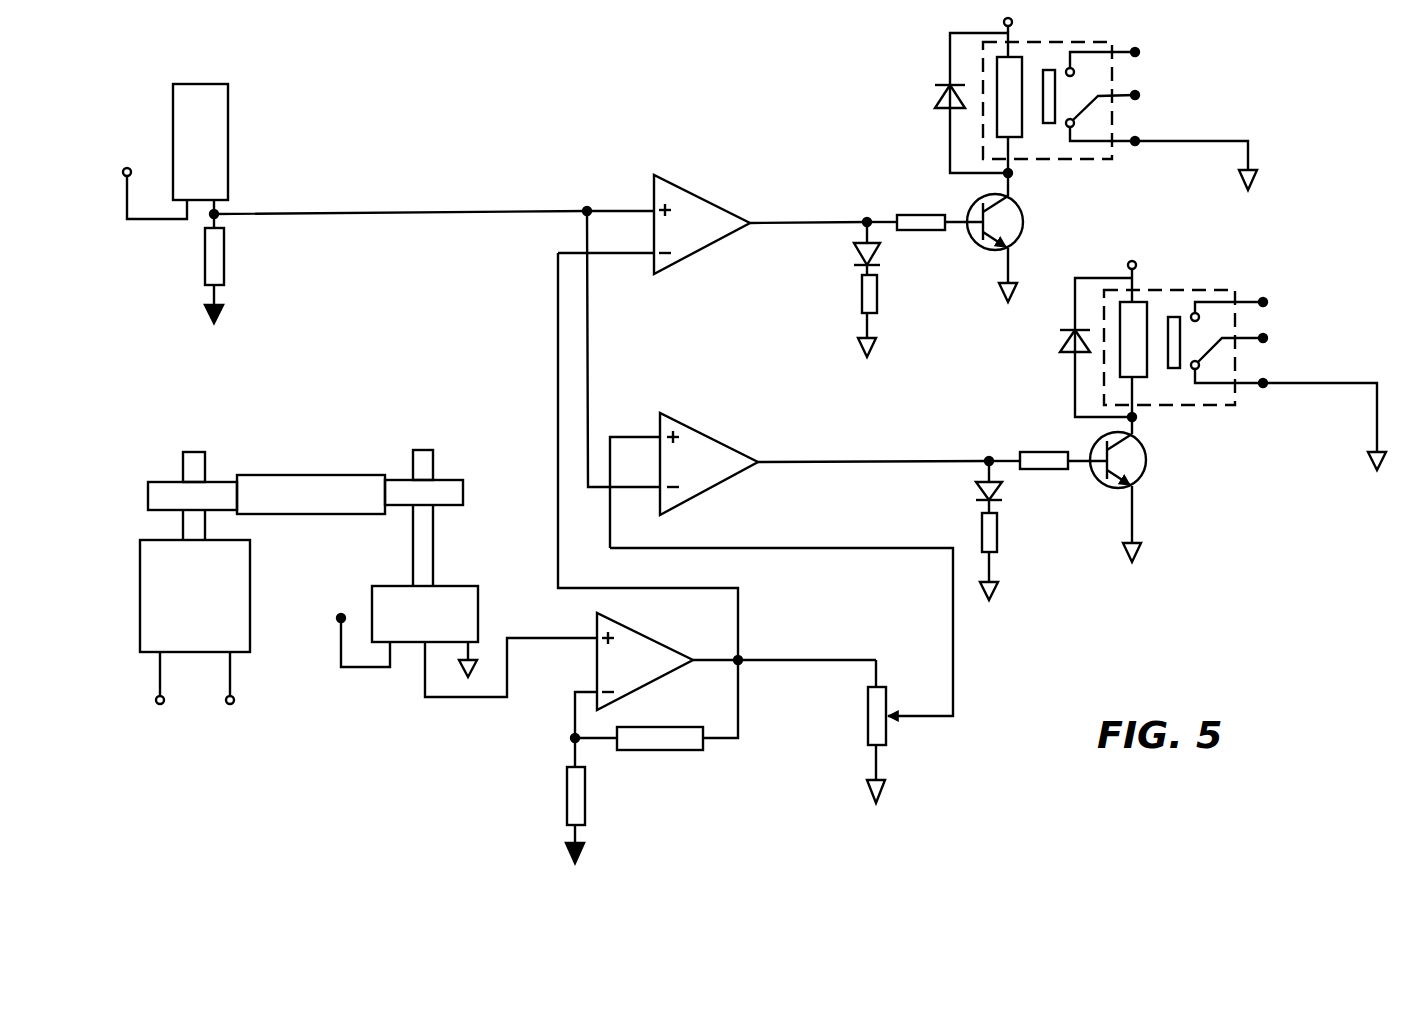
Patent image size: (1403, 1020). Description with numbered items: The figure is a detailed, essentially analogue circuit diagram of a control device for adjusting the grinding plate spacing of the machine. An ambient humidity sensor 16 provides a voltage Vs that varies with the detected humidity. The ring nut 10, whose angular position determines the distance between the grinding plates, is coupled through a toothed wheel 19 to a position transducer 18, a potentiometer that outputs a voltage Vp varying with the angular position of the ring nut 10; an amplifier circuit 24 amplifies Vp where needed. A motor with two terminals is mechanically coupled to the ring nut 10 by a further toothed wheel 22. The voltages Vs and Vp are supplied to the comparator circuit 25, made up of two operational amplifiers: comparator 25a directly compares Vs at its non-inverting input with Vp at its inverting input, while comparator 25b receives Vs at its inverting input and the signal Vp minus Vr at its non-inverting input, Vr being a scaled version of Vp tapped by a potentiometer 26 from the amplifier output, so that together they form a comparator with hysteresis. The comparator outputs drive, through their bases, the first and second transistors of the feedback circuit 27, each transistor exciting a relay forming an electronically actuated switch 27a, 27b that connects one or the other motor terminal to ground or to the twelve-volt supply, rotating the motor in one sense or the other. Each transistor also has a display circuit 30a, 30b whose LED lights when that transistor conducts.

The ring nut 10 is at (288, 485).
The ambient humidity sensor 16 is at (217, 157).
The position transducer 18 is at (455, 600).
The toothed wheel 19 is at (452, 492).
The toothed wheel 22 is at (165, 488).
The amplifier circuit 24 is at (597, 662).
The comparator circuit 25 is at (703, 401).
The comparator 25a is at (692, 217).
The comparator 25b is at (692, 445).
The potentiometer 26 is at (876, 712).
The feedback circuit 27 is at (1142, 262).
The electronically actuated switch 27a is at (1188, 65).
The electronically actuated switch 27b is at (1190, 422).
The display circuit 30a is at (913, 284).
The display circuit 30b is at (1044, 548).